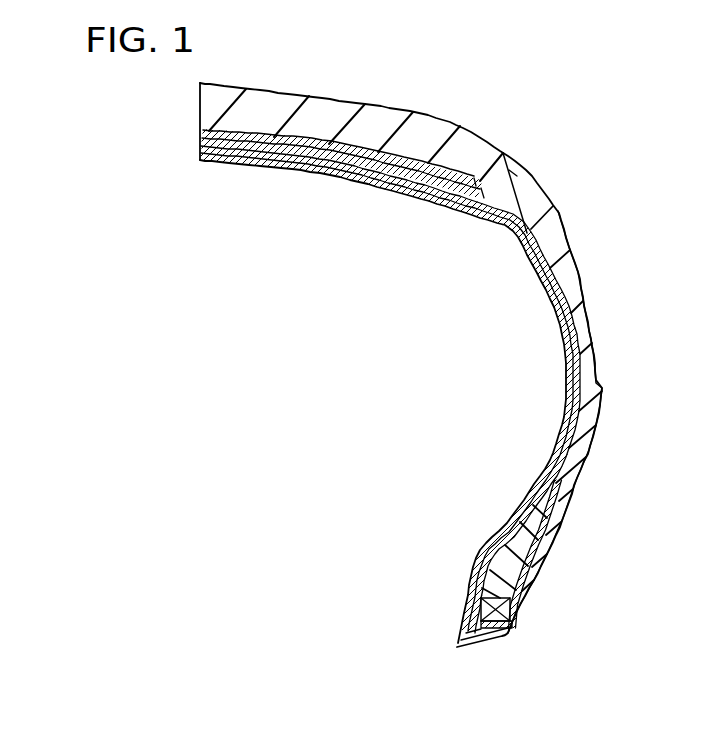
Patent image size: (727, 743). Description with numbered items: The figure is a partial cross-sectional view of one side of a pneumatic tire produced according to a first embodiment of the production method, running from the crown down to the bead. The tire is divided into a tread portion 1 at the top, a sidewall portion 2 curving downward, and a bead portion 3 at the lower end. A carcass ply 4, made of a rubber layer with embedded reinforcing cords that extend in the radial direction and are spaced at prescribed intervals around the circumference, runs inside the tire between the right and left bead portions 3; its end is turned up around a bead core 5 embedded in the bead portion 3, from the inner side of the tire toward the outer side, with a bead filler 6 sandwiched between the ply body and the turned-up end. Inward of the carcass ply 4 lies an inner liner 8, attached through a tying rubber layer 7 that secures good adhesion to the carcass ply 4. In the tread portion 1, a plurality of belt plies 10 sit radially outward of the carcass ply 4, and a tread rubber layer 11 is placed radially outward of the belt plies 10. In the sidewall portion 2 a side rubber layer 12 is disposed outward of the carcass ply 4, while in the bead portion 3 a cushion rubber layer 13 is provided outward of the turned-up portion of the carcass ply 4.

The tread portion 1 is at (342, 97).
The sidewall portion 2 is at (598, 357).
The bead portion 3 is at (528, 615).
The carcass ply 4 is at (568, 292).
The bead core 5 is at (466, 616).
The bead filler 6 is at (507, 545).
The tying rubber layer 7 is at (348, 174).
The inner liner 8 is at (313, 172).
The belt plies 10 is at (265, 135).
The tread rubber layer 11 is at (427, 119).
The side rubber layer 12 is at (580, 462).
The cushion rubber layer 13 is at (498, 637).